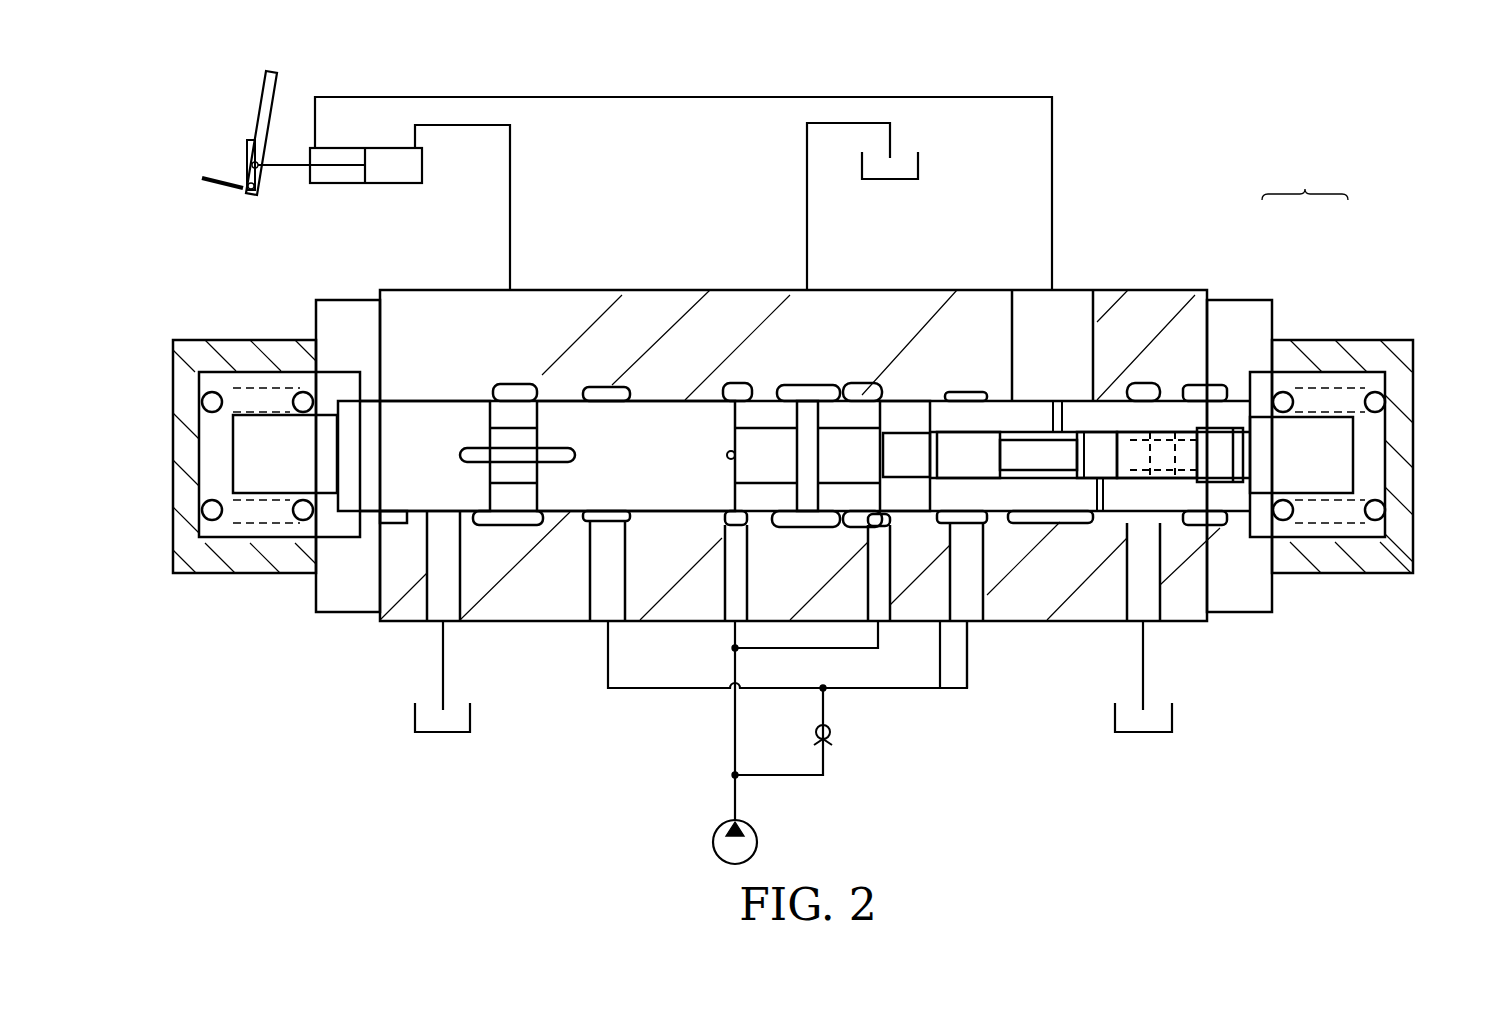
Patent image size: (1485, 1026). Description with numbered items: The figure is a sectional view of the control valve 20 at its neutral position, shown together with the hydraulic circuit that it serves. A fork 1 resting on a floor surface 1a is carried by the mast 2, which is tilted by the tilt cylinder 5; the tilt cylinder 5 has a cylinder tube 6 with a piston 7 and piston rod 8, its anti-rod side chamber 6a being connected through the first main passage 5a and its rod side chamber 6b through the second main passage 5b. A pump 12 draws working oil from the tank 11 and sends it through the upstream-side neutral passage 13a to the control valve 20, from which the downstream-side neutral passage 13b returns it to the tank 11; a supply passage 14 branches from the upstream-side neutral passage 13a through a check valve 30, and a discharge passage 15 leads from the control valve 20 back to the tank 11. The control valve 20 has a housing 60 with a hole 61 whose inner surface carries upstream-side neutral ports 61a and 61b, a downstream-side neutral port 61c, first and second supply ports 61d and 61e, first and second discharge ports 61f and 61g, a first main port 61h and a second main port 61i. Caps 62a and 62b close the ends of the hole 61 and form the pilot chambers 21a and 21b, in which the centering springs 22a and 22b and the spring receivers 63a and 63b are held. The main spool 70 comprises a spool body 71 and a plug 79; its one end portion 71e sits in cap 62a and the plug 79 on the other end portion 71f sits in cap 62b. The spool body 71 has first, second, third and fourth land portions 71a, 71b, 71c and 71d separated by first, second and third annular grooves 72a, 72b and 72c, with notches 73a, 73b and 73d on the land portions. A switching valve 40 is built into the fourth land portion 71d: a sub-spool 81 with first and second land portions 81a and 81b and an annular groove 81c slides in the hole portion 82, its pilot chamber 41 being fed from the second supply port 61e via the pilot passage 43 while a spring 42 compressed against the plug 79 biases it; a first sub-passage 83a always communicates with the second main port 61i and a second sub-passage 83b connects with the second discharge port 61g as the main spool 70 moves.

The fork 1 is at (222, 192).
The floor surface 1a is at (205, 180).
The mast 2 is at (262, 108).
The tilt cylinder 5 is at (420, 142).
The first main passage 5a is at (512, 148).
The second main passage 5b is at (1054, 125).
The cylinder tube 6 is at (393, 148).
The anti-rod side chamber 6a is at (400, 178).
The rod side chamber 6b is at (350, 178).
The piston 7 is at (400, 172).
The piston rod 8 is at (288, 160).
The tank 11 is at (920, 165).
The pump 12 is at (713, 840).
The upstream-side neutral passage 13a is at (733, 762).
The downstream-side neutral passage 13b is at (807, 140).
The supply passage 14 is at (805, 780).
The discharge passage 15 is at (443, 686).
The control valve 20 is at (1165, 178).
The pilot chamber 21a is at (212, 372).
The pilot chamber 21b is at (1365, 372).
The centering spring 22a is at (212, 520).
The centering spring 22b is at (1375, 520).
The check valve 30 is at (832, 735).
The switching valve 40 is at (1160, 400).
The pilot chamber 41 is at (900, 400).
The spring 42 is at (1225, 428).
The pilot passage 43 is at (915, 430).
The housing 60 is at (508, 600).
The hole 61 is at (648, 621).
The upstream-side neutral port 61a is at (715, 600).
The upstream-side neutral port 61b is at (912, 621).
The downstream-side neutral port 61c is at (773, 383).
The first supply port 61d is at (590, 621).
The second supply port 61e is at (940, 690).
The first discharge port 61f is at (415, 600).
The second discharge port 61g is at (1180, 621).
The first main port 61h is at (548, 400).
The second main port 61i is at (1070, 400).
The cap 62a is at (240, 560).
The cap 62b is at (1350, 560).
The spring receiver 63a is at (340, 580).
The spring receiver 63b is at (1250, 580).
The main spool 70 is at (1305, 180).
The spool body 71 is at (1280, 372).
The first land portion 71a is at (352, 440).
The second land portion 71b is at (655, 400).
The third land portion 71c is at (830, 400).
The fourth land portion 71d is at (1180, 430).
The one end portion 71e is at (225, 468).
The other end portion 71f is at (1345, 428).
The first annular groove 72a is at (478, 400).
The second annular groove 72b is at (742, 395).
The third annular groove 72c is at (810, 400).
The notch 73a is at (440, 455).
The notch 73b is at (622, 387).
The notch 73d is at (1095, 430).
The plug 79 is at (1318, 372).
The sub-spool 81 is at (965, 430).
The first land portion 81a is at (1010, 440).
The second land portion 81b is at (1110, 430).
The annular groove 81c is at (1090, 430).
The hole portion 82 is at (1150, 485).
The first sub-passage 83a is at (1205, 485).
The second sub-passage 83b is at (1235, 485).